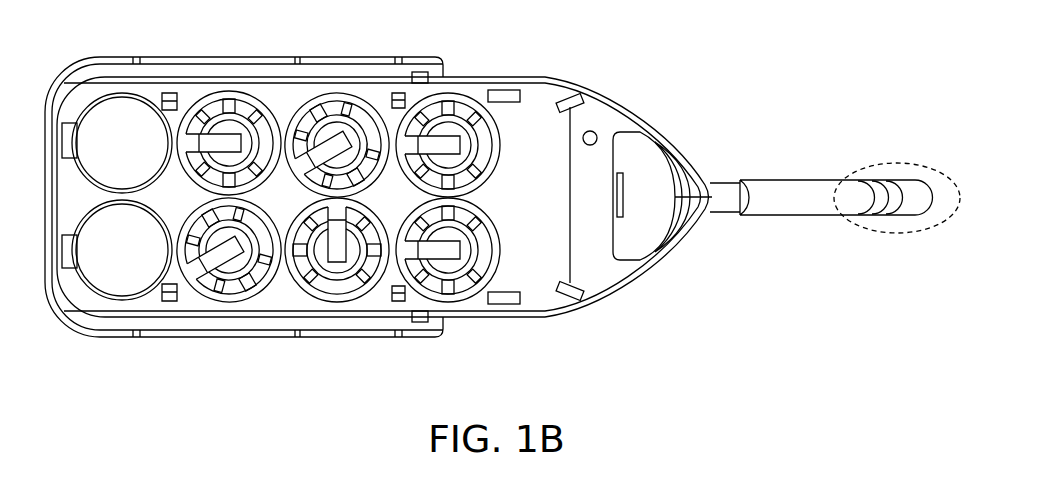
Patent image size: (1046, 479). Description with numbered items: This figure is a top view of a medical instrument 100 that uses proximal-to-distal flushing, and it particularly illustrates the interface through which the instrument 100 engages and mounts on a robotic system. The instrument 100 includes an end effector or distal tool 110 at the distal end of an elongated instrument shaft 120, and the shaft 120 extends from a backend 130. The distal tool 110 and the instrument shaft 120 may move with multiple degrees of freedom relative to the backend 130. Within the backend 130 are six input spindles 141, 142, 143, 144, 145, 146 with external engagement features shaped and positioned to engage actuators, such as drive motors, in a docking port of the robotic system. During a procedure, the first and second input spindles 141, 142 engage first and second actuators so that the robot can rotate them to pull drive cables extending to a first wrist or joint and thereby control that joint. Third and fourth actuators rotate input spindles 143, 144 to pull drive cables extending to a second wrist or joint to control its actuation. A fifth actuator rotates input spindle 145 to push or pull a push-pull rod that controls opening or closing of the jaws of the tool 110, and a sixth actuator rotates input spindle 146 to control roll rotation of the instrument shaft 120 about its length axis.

The medical instrument 100 is at (502, 197).
The end effector 110 is at (897, 163).
The instrument shaft 120 is at (780, 180).
The backend 130 is at (508, 210).
The input spindle 141 is at (233, 267).
The input spindle 142 is at (230, 130).
The input spindle 143 is at (338, 263).
The input spindle 144 is at (337, 130).
The input spindle 145 is at (447, 267).
The input spindle 146 is at (455, 133).